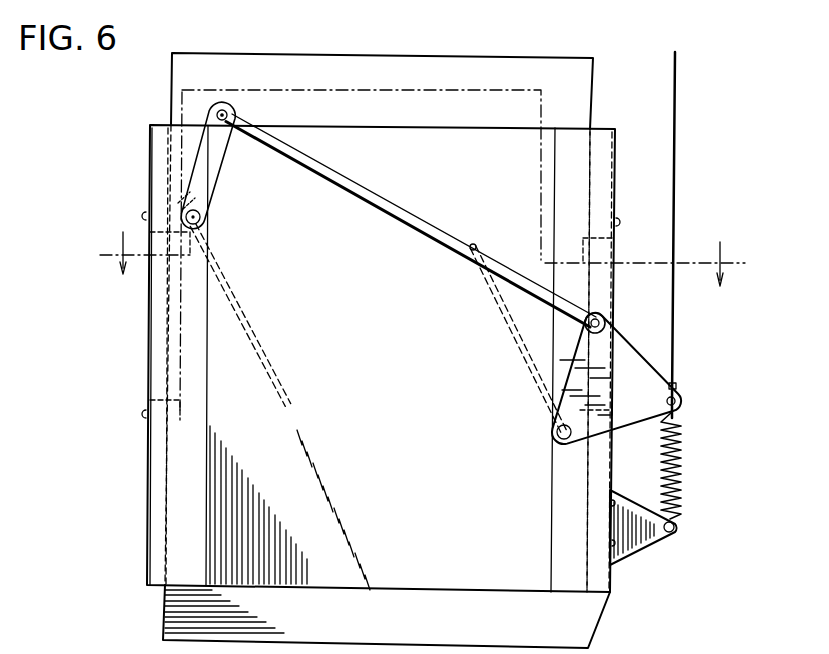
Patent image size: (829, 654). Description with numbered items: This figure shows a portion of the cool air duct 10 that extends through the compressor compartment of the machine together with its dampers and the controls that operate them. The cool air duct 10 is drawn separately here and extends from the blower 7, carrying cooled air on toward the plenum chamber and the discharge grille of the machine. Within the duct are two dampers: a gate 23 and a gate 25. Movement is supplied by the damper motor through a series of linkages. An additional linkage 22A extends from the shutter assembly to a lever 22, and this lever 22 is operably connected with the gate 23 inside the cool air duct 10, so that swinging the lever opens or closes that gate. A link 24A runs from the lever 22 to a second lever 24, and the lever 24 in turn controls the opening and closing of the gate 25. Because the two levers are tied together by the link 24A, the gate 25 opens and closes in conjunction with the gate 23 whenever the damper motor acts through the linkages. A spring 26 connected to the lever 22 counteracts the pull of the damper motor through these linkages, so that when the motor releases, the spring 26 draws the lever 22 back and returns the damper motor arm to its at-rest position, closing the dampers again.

The cool air duct 10 is at (430, 493).
The blower 7 is at (419, 259).
The lever 22 is at (640, 372).
The linkage 22A is at (678, 172).
The gate 23 is at (508, 315).
The lever 24 is at (215, 180).
The link 24A is at (458, 197).
The gate 25 is at (252, 345).
The spring 26 is at (685, 470).